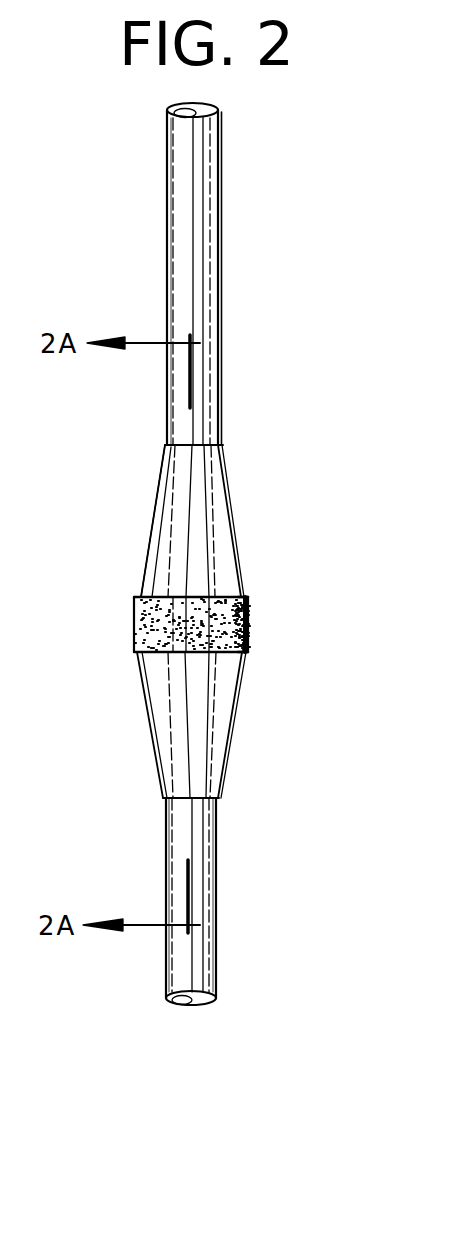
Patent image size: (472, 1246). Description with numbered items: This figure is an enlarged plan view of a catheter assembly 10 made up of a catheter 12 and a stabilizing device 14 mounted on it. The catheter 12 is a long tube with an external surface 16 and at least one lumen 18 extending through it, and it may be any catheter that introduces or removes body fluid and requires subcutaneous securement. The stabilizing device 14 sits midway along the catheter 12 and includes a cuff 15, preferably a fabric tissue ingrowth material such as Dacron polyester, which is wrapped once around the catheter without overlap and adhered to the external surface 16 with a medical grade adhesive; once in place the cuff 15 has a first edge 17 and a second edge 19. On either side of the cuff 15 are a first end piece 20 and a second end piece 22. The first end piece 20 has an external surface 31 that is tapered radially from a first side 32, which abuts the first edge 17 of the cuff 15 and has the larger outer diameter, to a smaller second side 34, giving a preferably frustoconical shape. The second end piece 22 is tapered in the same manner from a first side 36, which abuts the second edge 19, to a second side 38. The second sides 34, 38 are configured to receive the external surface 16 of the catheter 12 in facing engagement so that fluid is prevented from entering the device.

The catheter assembly 10 is at (250, 380).
The catheter 12 is at (220, 222).
The stabilizing device 14 is at (234, 510).
The cuff 15 is at (251, 623).
The external surface 16 is at (200, 840).
The first edge 17 is at (246, 597).
The lumen 18 is at (187, 1002).
The second edge 19 is at (247, 653).
The first end piece 20 is at (160, 490).
The second end piece 22 is at (152, 742).
The external surface 31 is at (165, 557).
The first side 32 is at (140, 597).
The second side 34 is at (221, 445).
The first side 36 is at (137, 652).
The second side 38 is at (218, 798).